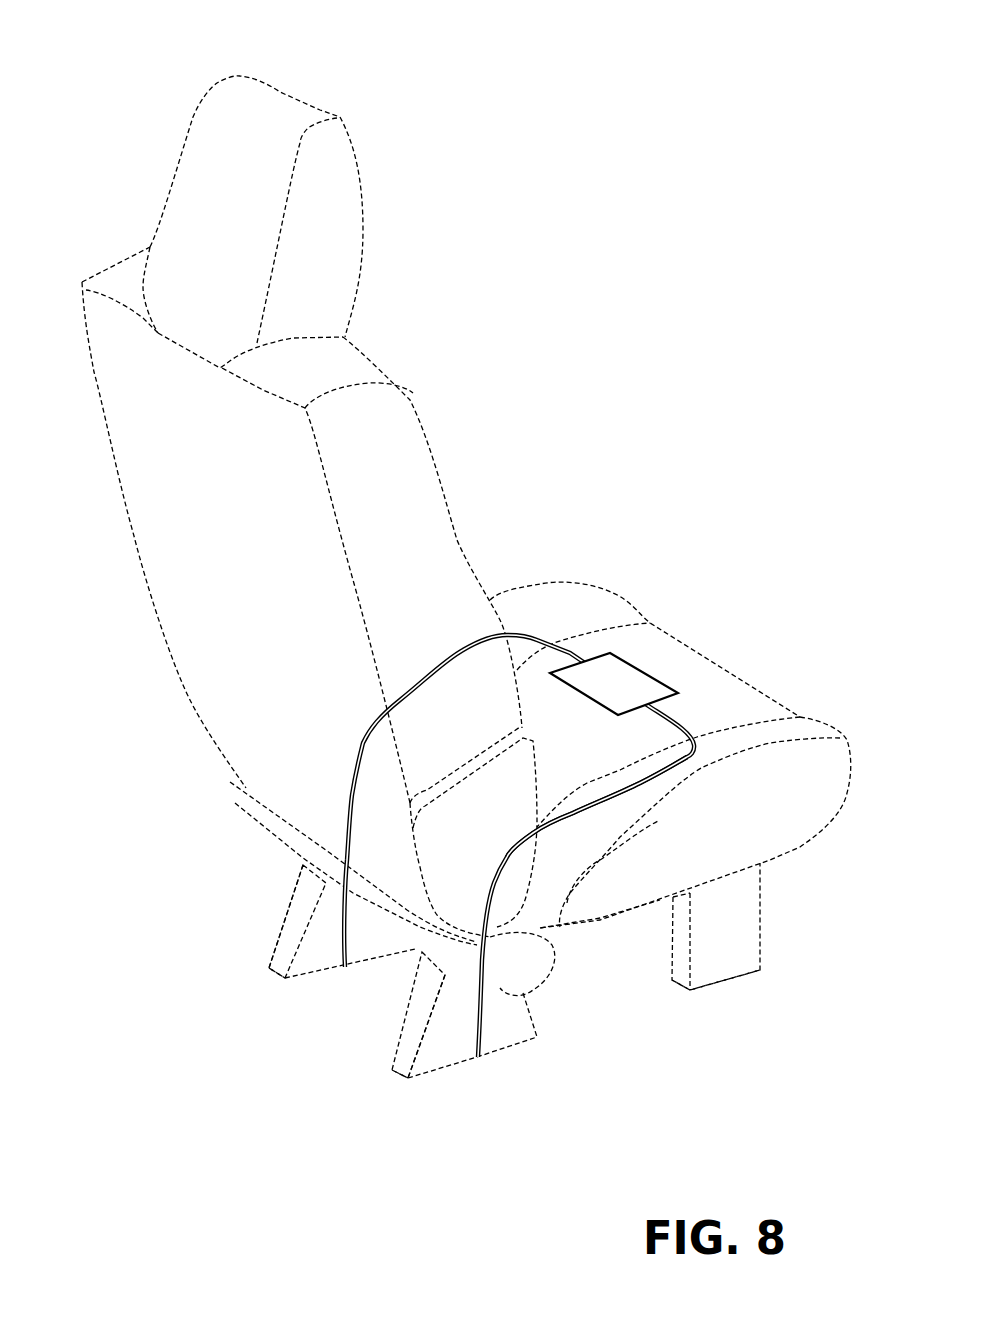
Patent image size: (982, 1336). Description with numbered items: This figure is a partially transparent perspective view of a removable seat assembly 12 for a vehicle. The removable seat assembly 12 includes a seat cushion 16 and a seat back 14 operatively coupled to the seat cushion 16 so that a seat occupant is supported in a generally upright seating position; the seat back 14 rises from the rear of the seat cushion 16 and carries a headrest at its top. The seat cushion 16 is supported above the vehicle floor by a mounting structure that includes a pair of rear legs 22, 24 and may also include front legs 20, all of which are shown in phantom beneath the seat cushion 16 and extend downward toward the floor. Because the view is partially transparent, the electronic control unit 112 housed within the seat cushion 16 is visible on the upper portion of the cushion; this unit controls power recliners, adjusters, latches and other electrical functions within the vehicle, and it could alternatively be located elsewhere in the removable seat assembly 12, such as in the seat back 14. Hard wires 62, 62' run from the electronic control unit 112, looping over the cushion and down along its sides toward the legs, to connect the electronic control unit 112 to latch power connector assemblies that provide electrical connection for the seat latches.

The removable seat assembly 12 is at (268, 110).
The seat back 14 is at (224, 603).
The seat cushion 16 is at (795, 683).
The front legs 20 is at (720, 992).
The rear leg 22 is at (256, 952).
The rear leg 24 is at (381, 1057).
The hard wire 62 is at (519, 817).
The hard wire 62' is at (597, 887).
The electronic control unit 112 is at (664, 670).